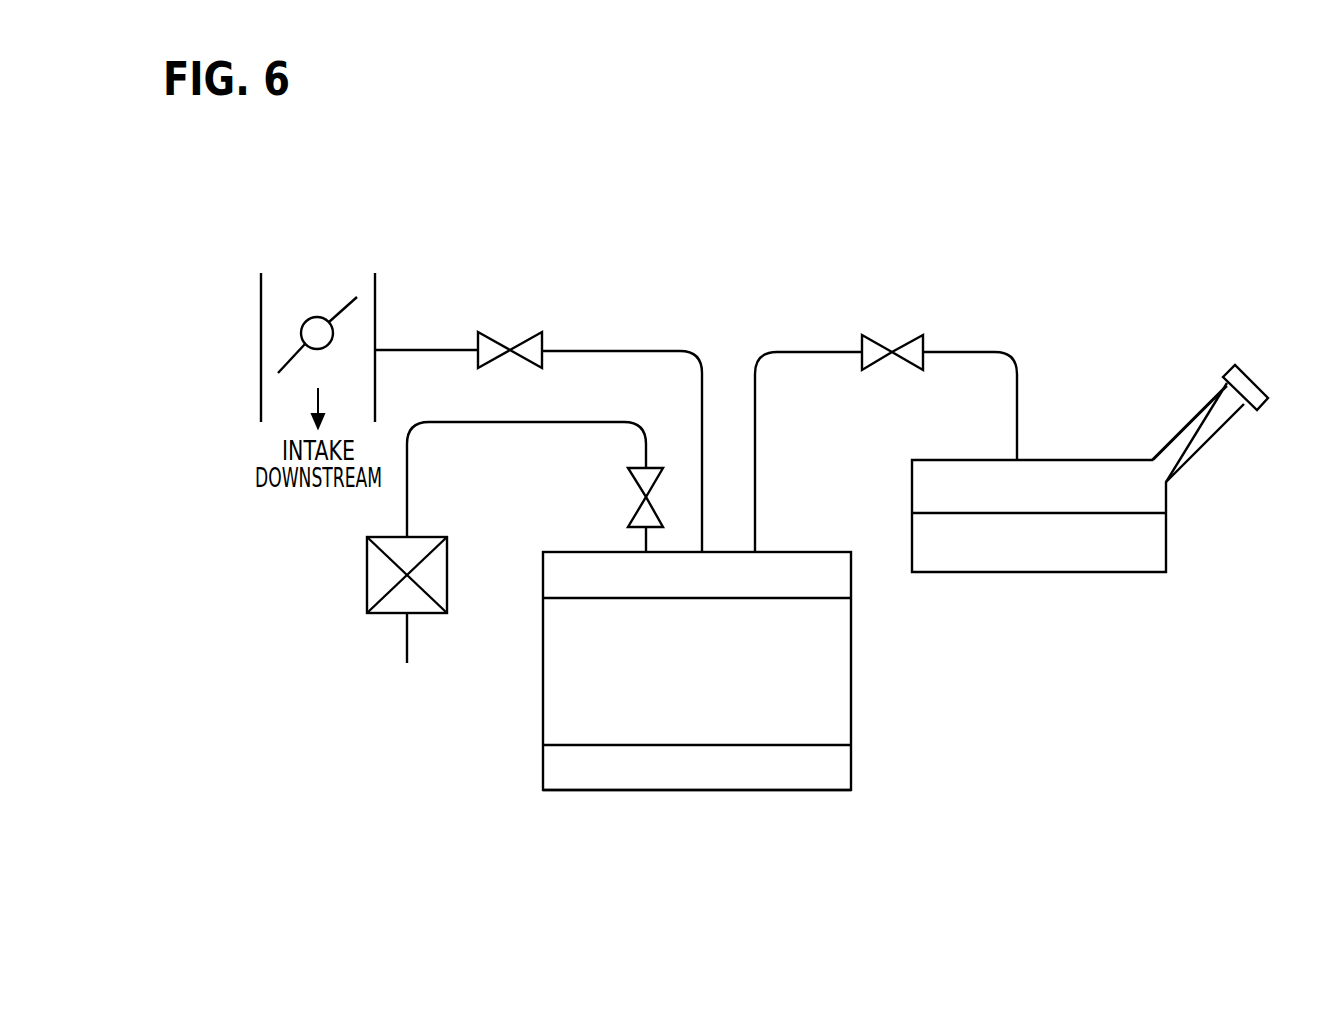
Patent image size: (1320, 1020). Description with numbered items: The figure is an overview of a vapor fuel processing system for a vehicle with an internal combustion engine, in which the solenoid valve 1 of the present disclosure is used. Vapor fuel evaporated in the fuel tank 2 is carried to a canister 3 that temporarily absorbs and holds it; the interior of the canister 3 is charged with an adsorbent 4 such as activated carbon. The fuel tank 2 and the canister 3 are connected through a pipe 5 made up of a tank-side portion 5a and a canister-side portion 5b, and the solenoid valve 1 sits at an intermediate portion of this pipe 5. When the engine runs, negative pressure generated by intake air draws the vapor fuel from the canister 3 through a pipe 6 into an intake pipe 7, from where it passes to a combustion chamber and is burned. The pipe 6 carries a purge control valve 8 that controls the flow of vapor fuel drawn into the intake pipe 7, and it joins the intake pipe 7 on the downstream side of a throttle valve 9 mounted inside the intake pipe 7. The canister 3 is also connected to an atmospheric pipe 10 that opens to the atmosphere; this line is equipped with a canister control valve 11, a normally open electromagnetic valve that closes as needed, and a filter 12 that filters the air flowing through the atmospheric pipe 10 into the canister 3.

The solenoid valve 1 is at (875, 337).
The fuel tank 2 is at (1090, 458).
The canister 3 is at (852, 767).
The adsorbent 4 is at (822, 674).
The pipe 5 is at (888, 419).
The pipe portion 5a is at (982, 350).
The pipe portion 5b is at (787, 350).
The pipe 6 is at (620, 348).
The intake pipe 7 is at (377, 300).
The purge control valve 8 is at (492, 335).
The throttle valve 9 is at (285, 362).
The atmospheric pipe 10 is at (407, 640).
The canister control valve 11 is at (635, 482).
The filter 12 is at (367, 573).